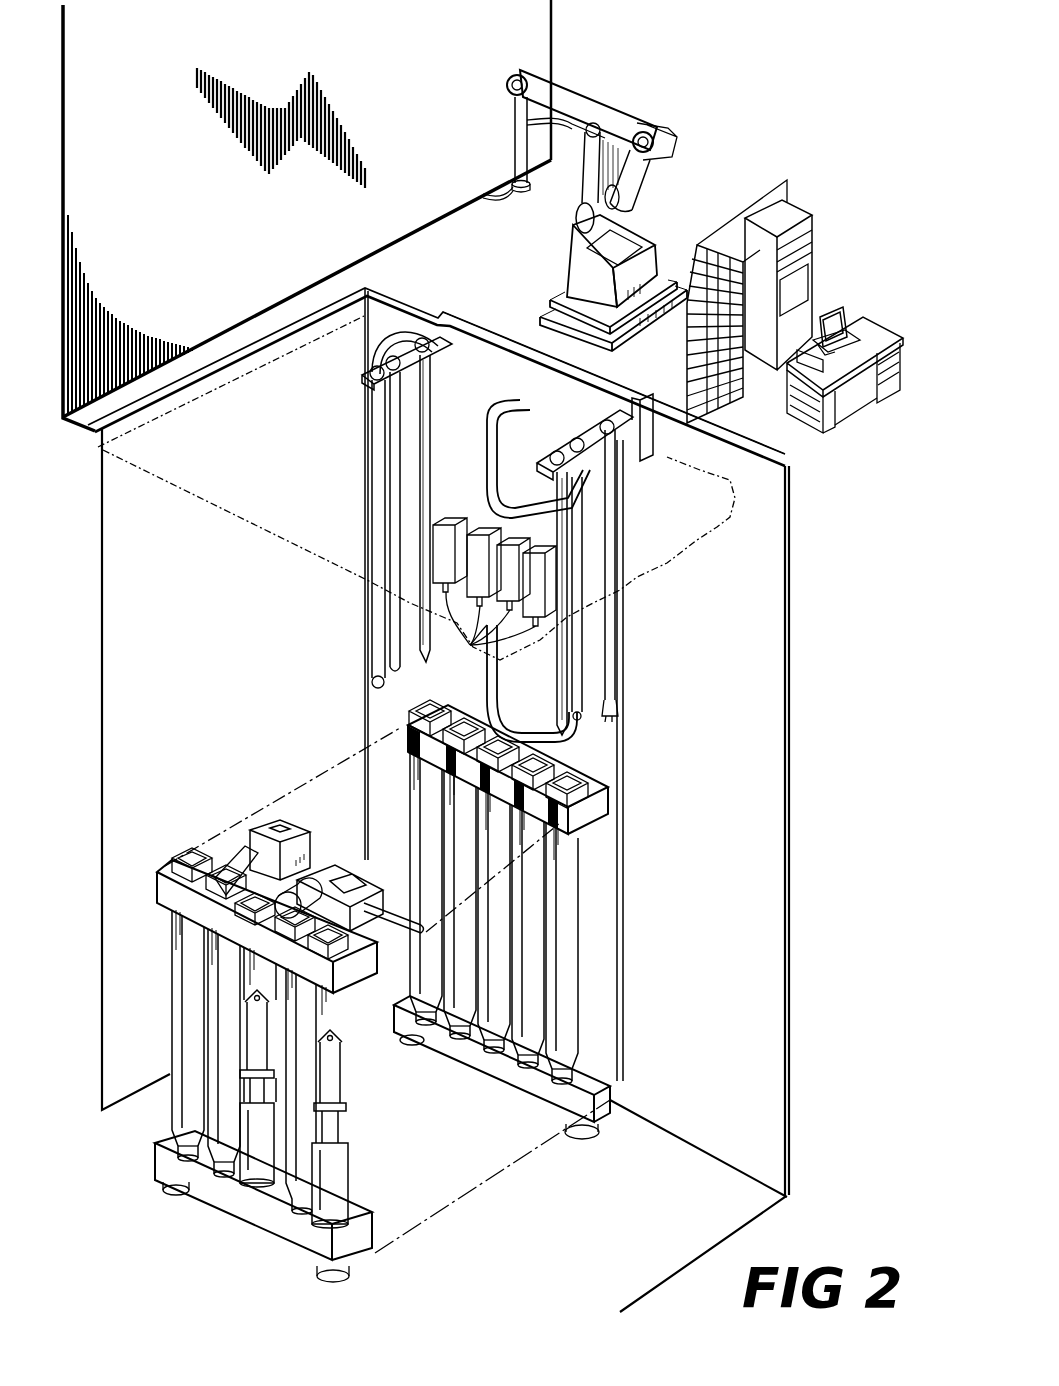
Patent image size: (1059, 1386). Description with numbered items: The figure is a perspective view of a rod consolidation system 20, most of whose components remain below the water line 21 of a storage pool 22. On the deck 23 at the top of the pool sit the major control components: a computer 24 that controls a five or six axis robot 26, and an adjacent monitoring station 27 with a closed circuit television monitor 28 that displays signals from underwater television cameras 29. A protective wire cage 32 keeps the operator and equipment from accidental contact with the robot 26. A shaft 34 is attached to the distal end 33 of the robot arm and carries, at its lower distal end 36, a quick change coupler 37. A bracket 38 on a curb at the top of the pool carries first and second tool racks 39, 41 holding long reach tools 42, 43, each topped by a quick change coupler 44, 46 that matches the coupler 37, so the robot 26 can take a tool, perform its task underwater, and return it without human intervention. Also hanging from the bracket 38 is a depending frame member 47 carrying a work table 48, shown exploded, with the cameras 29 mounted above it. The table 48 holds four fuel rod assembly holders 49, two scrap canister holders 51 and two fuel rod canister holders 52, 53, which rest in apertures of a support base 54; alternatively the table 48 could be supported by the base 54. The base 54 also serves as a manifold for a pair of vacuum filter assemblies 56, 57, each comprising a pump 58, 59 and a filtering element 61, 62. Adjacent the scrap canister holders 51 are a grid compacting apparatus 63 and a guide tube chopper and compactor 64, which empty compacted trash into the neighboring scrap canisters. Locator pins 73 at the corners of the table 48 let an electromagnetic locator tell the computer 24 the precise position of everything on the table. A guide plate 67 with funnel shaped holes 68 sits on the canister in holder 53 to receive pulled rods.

The rod consolidation system 20 is at (753, 55).
The water line 21 is at (675, 545).
The storage pool 22 is at (752, 785).
The deck 23 is at (786, 450).
The computer 24 is at (788, 186).
The robot 26 is at (648, 110).
The monitoring station 27 is at (875, 330).
The closed circuit television monitor 28 is at (833, 293).
The underwater television cameras 29 is at (511, 571).
The protective wire cage 32 is at (726, 230).
The distal end of robot arm 33 is at (517, 75).
The shaft 34 is at (512, 119).
The distal end of shaft 36 is at (503, 156).
The quick change coupler 37 is at (500, 196).
The bracket 38 is at (648, 400).
The first tool rack 39 is at (362, 378).
The second tool rack 41 is at (633, 460).
The long reach tools 42 is at (425, 445).
The long reach tools 43 is at (605, 505).
The quick change coupler 44 is at (372, 350).
The quick change coupler 46 is at (588, 460).
The depending frame member 47 is at (623, 752).
The work table 48 is at (600, 805).
The fuel rod assembly holders 49 is at (525, 723).
The scrap canister holders 51 is at (260, 1040).
The fuel rod canister holder 52 is at (173, 960).
The fuel rod canister holder 53 is at (412, 875).
The support base 54 is at (592, 1135).
The vacuum filter assembly 56 is at (368, 1155).
The vacuum filter assembly 57 is at (235, 1080).
The pump 58 is at (340, 1180).
The pump 59 is at (247, 1160).
The filtering element 61 is at (345, 1088).
The filtering element 62 is at (300, 1005).
The grid compacting apparatus 63 is at (355, 862).
The guide tube chopper and compactor 64 is at (298, 814).
The guide plate 67 is at (373, 512).
The funnel shaped holes 68 is at (395, 464).
The locator pins 73 is at (172, 860).